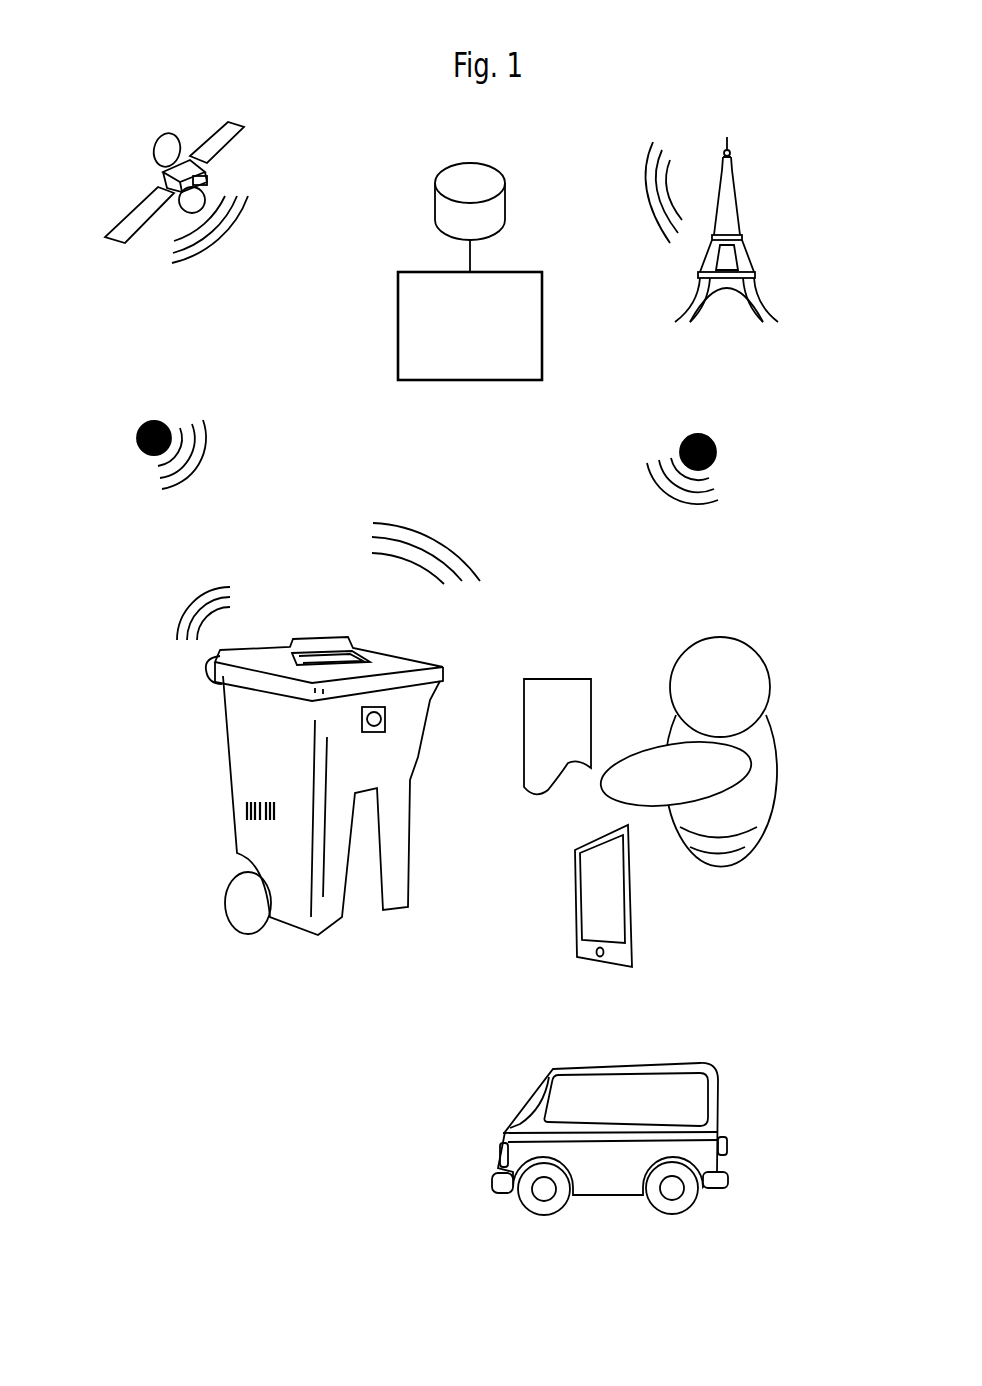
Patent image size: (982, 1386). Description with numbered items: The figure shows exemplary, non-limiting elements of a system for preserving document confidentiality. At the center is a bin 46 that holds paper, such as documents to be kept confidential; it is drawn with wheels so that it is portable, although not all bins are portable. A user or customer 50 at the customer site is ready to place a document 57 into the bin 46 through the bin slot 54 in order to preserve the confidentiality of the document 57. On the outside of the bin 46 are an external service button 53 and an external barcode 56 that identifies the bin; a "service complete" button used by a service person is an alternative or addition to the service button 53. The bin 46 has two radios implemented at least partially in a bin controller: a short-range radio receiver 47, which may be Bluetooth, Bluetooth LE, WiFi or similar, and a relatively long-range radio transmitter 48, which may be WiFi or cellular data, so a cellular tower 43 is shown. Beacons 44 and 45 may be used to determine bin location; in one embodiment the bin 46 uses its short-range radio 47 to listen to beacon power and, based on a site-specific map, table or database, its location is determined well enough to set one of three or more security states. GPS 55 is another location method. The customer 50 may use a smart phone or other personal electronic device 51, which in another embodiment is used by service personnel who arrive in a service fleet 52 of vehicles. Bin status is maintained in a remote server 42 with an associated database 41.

The database 41 is at (497, 207).
The remote server 42 is at (527, 317).
The cellular tower 43 is at (727, 215).
The beacon 44 is at (137, 448).
The beacon 45 is at (718, 450).
The bin 46 is at (240, 783).
The radio receiver 47 is at (192, 610).
The radio transmitter 48 is at (440, 545).
The customer 50 is at (753, 807).
The personal electronic device 51 is at (582, 952).
The service fleet 52 is at (629, 1093).
The service button 53 is at (383, 732).
The bin slot 54 is at (347, 657).
The GPS 55 is at (225, 137).
The barcode 56 is at (262, 817).
The document 57 is at (543, 693).